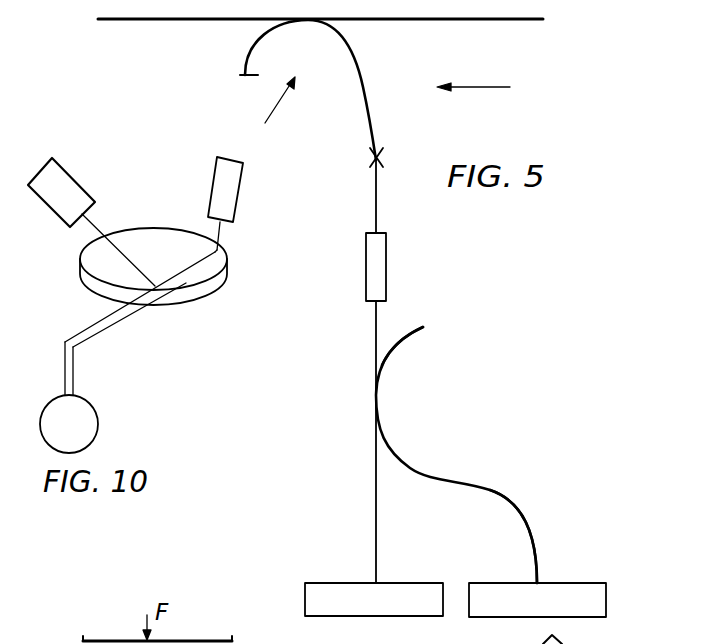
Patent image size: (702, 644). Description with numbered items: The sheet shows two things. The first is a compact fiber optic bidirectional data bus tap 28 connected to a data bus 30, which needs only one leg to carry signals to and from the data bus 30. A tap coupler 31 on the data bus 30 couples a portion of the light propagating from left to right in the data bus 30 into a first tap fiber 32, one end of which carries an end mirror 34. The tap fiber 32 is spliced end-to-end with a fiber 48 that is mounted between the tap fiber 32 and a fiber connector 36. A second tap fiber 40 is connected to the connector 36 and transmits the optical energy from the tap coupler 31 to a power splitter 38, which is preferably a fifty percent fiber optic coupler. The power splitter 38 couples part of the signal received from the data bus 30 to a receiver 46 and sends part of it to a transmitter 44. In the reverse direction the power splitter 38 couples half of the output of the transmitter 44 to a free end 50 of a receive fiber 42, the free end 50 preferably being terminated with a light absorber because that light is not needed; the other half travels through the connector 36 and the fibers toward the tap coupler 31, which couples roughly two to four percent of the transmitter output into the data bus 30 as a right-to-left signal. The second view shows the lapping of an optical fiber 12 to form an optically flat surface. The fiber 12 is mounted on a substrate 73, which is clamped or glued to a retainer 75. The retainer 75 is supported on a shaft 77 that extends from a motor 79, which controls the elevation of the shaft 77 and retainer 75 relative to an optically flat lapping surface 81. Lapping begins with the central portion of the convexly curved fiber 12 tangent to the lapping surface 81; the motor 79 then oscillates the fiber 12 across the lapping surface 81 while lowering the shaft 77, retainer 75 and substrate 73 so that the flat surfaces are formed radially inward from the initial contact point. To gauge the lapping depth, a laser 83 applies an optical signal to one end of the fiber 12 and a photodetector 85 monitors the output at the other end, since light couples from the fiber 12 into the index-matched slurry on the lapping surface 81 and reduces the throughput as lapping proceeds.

In FIG. 10, the fiber 12 is at (222, 233).
In FIG. 5, the fiber optic bidirectional data bus tap 28 is at (489, 90).
In FIG. 5, the data bus 30 is at (488, 20).
In FIG. 5, the tap coupler 31 is at (270, 106).
In FIG. 5, the first tap fiber 32 is at (362, 70).
In FIG. 5, the end mirror 34 is at (243, 78).
In FIG. 5, the fiber connector 36 is at (386, 264).
In FIG. 5, the power splitter 38 is at (400, 397).
In FIG. 5, the second tap fiber 40 is at (376, 321).
In FIG. 5, the receive fiber 42 is at (508, 498).
In FIG. 5, the transmitter 44 is at (322, 582).
In FIG. 5, the receiver 46 is at (606, 602).
In FIG. 5, the fiber 48 is at (405, 157).
In FIG. 5, the free end 50 is at (442, 316).
In FIG. 10, the substrate 73 is at (188, 204).
In FIG. 10, the retainer 75 is at (140, 308).
In FIG. 10, the shaft 77 is at (73, 370).
In FIG. 10, the motor 79 is at (98, 418).
In FIG. 10, the lapping surface 81 is at (179, 272).
In FIG. 10, the laser 83 is at (240, 180).
In FIG. 10, the photodetector 85 is at (88, 186).